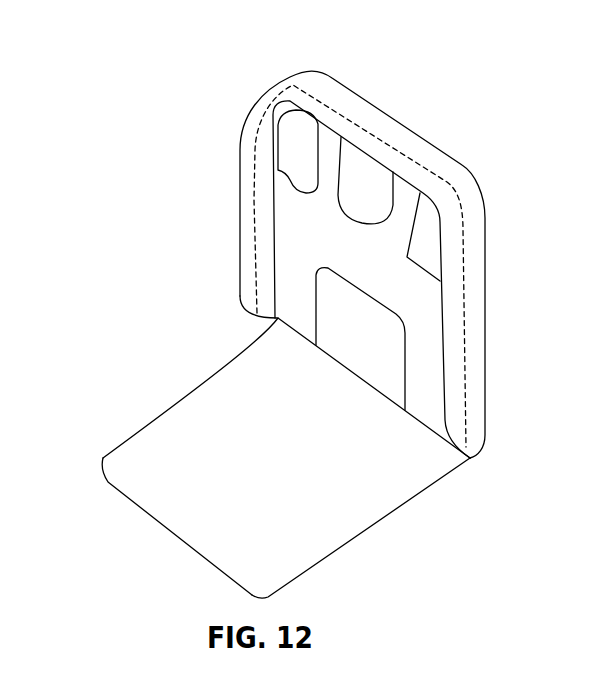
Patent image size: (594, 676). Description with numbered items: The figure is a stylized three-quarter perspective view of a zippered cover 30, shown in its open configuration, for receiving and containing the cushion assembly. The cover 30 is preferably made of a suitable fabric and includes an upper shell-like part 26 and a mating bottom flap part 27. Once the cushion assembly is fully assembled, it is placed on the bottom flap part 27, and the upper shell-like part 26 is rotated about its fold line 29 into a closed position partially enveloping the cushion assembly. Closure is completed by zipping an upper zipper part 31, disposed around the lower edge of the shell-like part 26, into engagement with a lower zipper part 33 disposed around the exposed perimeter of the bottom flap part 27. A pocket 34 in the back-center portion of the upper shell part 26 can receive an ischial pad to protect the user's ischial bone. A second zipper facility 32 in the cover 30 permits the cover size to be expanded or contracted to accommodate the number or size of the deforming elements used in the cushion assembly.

The upper shell-like part 26 is at (487, 307).
The bottom flap part 27 is at (240, 553).
The fold line 29 is at (315, 322).
The cover 30 is at (189, 386).
The upper zipper part 31 is at (420, 192).
The second zipper facility 32 is at (319, 99).
The lower zipper part 33 is at (130, 501).
The pocket 34 is at (347, 319).